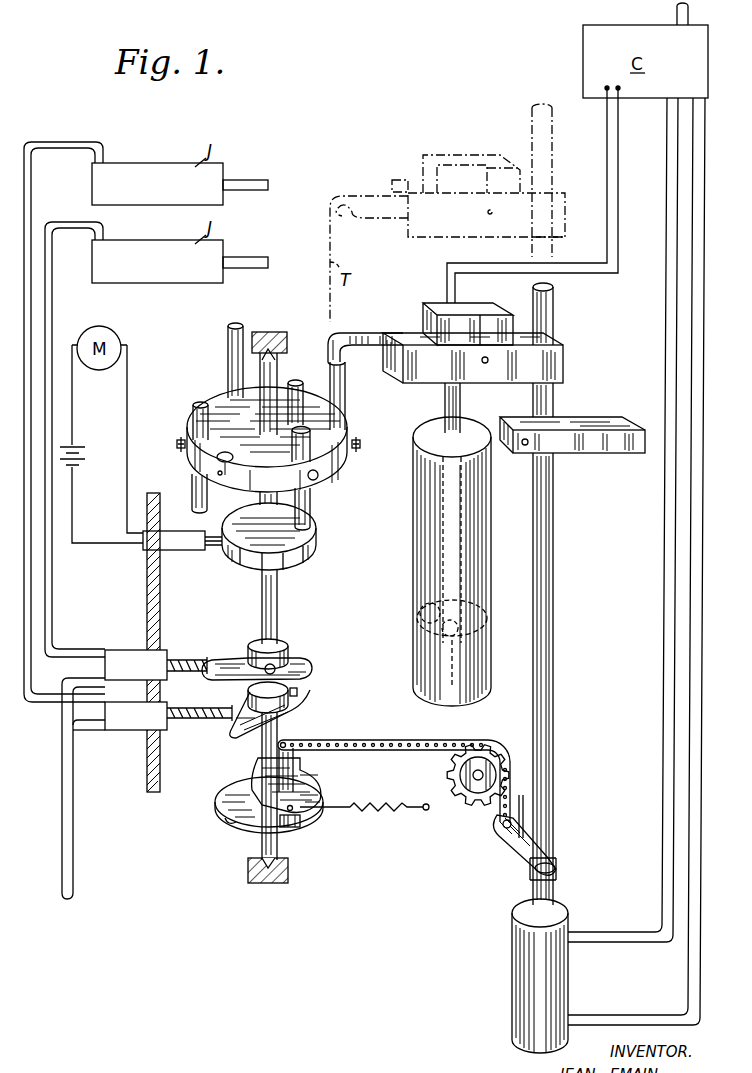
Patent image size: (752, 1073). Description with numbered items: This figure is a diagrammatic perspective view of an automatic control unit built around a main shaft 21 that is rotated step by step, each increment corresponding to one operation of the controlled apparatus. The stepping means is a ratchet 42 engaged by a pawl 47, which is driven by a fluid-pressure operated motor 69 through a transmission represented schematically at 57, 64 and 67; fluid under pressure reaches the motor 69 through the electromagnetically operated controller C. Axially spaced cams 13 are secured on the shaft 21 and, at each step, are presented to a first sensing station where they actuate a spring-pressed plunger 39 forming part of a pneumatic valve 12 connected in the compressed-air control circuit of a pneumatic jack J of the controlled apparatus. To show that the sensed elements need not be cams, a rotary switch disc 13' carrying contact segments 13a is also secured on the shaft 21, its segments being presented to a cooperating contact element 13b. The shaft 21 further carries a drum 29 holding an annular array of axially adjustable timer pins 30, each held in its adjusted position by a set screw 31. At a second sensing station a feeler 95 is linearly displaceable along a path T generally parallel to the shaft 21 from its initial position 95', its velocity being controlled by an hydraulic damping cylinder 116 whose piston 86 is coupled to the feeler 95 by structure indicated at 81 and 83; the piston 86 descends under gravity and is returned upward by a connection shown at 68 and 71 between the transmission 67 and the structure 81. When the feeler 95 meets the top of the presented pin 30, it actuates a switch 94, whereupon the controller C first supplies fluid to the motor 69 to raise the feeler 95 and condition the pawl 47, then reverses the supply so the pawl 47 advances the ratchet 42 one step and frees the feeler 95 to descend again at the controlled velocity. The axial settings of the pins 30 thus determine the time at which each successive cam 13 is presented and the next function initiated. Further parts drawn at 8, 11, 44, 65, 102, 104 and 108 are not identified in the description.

The conduit tube 8 is at (68, 840).
The conductors 11 is at (64, 680).
The pneumatic valve 12 is at (125, 660).
The cam 13 is at (275, 684).
The rotary switch disc 13' is at (289, 536).
The contact segment 13a is at (250, 560).
The contact element 13b is at (216, 552).
The main shaft 21 is at (278, 608).
The drum 29 is at (222, 405).
The pin 30 is at (228, 334).
The set screw 31 is at (176, 445).
The spring-pressed plunger 39 is at (178, 660).
The ratchet 42 is at (240, 826).
The cam plate 44 is at (285, 770).
The pawl 47 is at (295, 827).
The transmission 57 is at (418, 750).
The transmission 64 is at (515, 850).
The spring 65 is at (372, 813).
The transmission 67 is at (557, 886).
The connection 68 is at (553, 522).
The fluid-pressure operated motor 69 is at (512, 986).
The connection 71 is at (605, 452).
The structure 81 is at (565, 373).
The structure 83 is at (462, 407).
The piston 86 is at (420, 630).
The switch 94 is at (470, 312).
The feeler element 95 is at (365, 337).
The initial position 95' is at (447, 238).
The conductor 102 is at (598, 1016).
The pin 104 is at (525, 808).
The conductor 108 is at (598, 932).
The hydraulic damping cylinder 116 is at (413, 575).